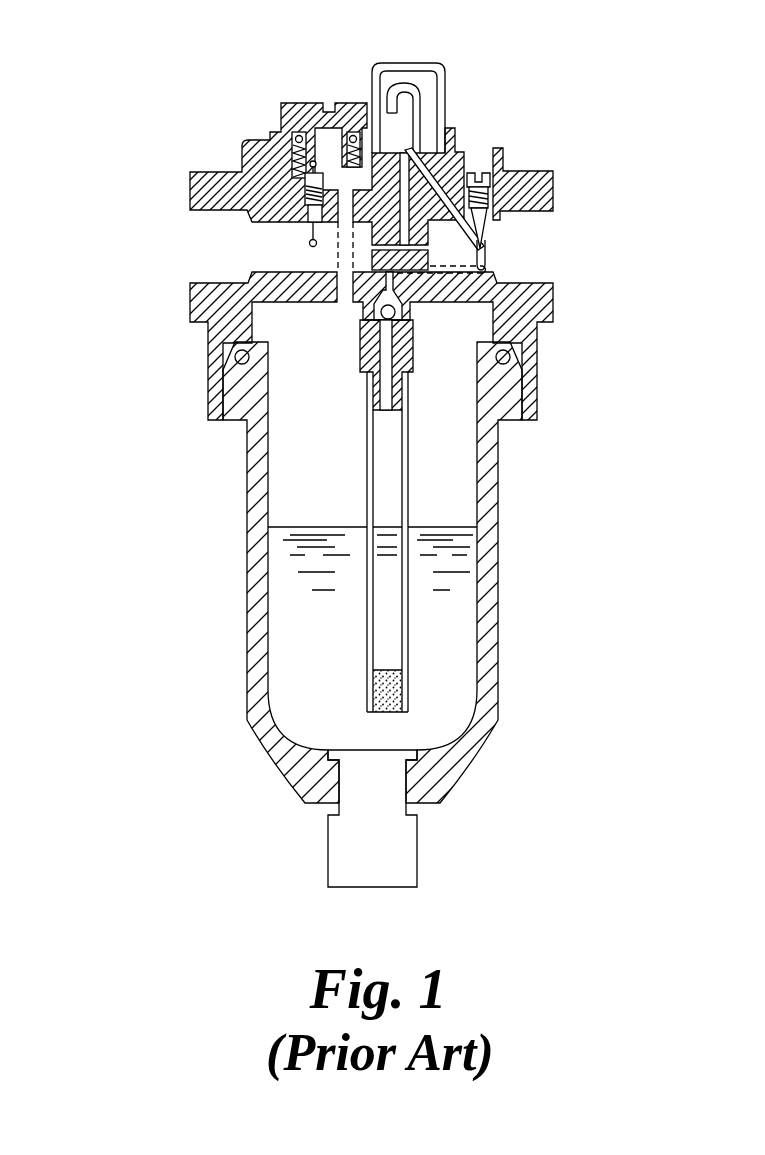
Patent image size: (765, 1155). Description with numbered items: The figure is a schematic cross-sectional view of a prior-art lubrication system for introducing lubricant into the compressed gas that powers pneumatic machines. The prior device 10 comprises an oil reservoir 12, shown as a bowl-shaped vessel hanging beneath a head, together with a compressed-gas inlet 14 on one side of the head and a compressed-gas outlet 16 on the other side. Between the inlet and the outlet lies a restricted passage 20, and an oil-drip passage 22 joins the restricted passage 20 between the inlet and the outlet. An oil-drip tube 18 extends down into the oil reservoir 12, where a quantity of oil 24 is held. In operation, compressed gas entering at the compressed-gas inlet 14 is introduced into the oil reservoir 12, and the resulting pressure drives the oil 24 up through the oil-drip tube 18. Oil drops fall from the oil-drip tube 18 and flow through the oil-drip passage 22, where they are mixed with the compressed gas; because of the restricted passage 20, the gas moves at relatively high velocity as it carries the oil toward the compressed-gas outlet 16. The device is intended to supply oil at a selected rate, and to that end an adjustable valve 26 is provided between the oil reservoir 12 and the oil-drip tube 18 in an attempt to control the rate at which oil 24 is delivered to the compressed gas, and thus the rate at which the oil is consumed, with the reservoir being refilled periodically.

The prior device 10 is at (119, 80).
The oil reservoir 12 is at (252, 573).
The compressed-gas inlet 14 is at (222, 262).
The compressed-gas outlet 16 is at (552, 262).
The oil-drip tube 18 is at (413, 85).
The restricted passage 20 is at (405, 248).
The oil-drip passage 22 is at (402, 200).
The oil 24 is at (443, 621).
The adjustable valve 26 is at (478, 241).